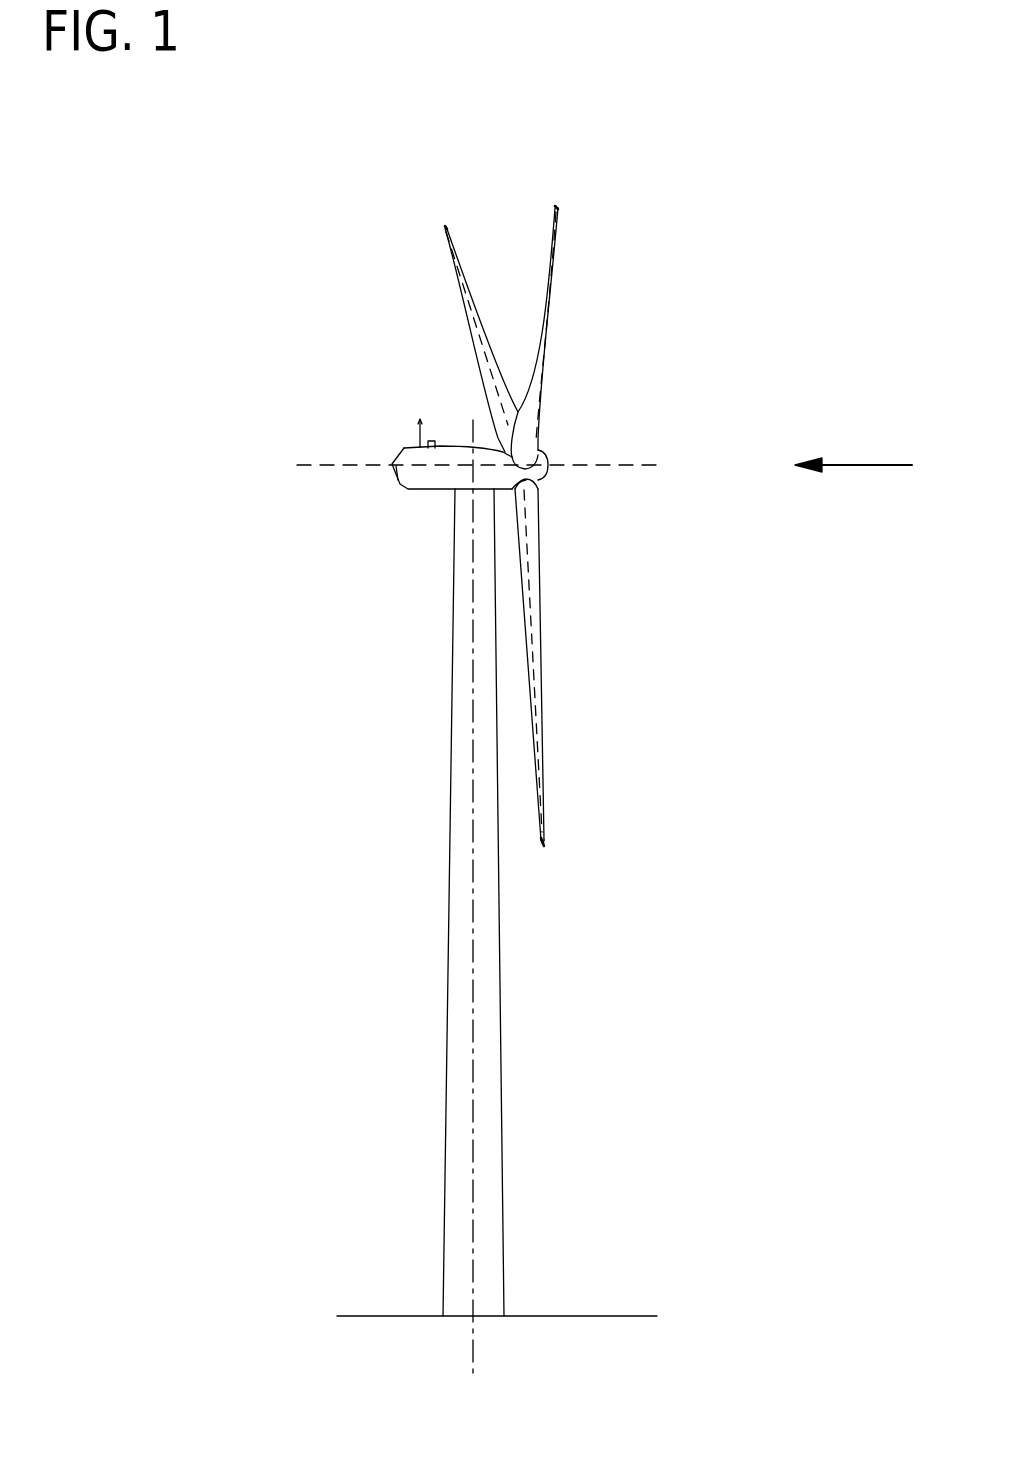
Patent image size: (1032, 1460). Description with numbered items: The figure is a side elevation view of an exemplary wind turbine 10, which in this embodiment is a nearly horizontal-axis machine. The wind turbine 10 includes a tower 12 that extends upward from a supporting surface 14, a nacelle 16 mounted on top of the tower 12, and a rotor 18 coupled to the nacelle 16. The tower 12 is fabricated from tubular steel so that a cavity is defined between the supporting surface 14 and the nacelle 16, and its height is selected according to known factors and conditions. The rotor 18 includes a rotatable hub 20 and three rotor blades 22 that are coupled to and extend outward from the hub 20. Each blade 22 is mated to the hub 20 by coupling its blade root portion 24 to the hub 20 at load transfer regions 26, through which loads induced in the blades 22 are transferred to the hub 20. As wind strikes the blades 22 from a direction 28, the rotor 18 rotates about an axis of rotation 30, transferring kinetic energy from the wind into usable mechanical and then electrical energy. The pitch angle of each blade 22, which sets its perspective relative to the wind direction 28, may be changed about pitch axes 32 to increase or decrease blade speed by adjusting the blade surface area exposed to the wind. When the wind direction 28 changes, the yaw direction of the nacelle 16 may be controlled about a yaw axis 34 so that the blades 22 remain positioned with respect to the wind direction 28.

The wind turbine 10 is at (216, 242).
The tower 12 is at (447, 1068).
The supporting surface 14 is at (398, 1316).
The nacelle 16 is at (425, 489).
The rotor 18 is at (555, 362).
The rotatable hub 20 is at (544, 459).
The rotor blades 22 is at (467, 300).
The blade root portion 24 is at (535, 547).
The load transfer regions 26 is at (526, 486).
The wind direction 28 is at (872, 465).
The axis of rotation 30 is at (616, 468).
The pitch axes 32 is at (445, 228).
The yaw axis 34 is at (474, 935).